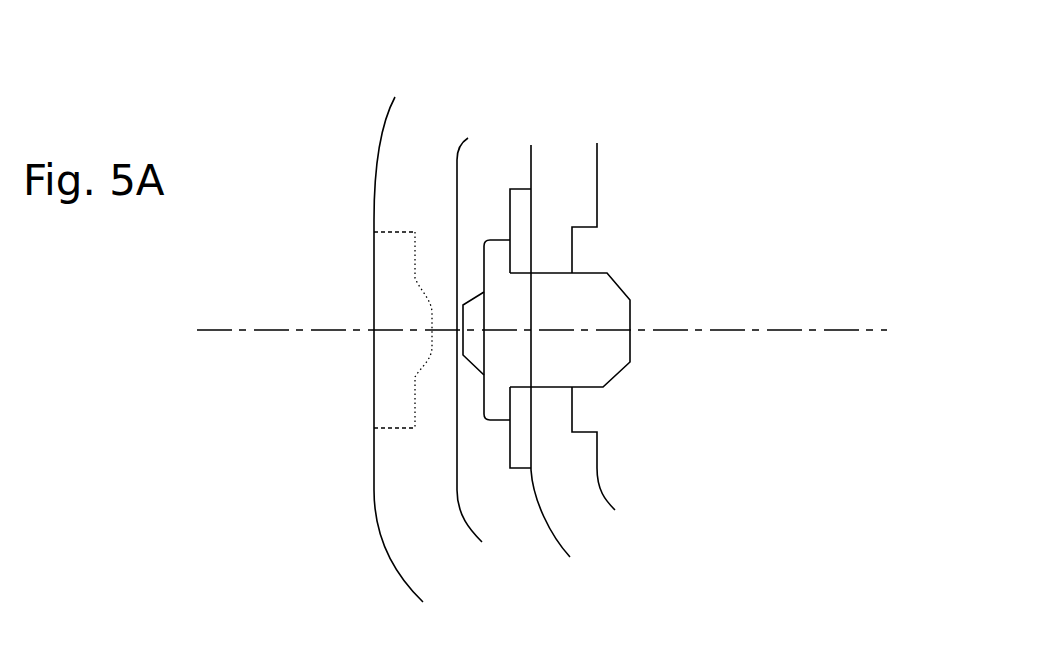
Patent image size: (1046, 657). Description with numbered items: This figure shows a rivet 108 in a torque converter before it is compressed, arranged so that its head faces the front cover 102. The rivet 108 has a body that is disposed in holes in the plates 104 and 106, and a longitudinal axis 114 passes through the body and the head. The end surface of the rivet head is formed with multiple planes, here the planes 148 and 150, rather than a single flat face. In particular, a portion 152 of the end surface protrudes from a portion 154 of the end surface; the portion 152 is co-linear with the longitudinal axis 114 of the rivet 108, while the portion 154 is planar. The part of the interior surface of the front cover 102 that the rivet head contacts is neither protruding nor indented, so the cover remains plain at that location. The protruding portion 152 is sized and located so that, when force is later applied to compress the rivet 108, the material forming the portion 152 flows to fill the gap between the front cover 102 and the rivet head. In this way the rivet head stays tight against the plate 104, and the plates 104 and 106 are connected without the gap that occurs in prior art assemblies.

The front cover 102 is at (386, 115).
The plate 104 is at (522, 188).
The plate 106 is at (597, 175).
The rivet 108 is at (625, 385).
The longitudinal axis 114 is at (262, 329).
The plane 148 is at (457, 317).
The plane 150 is at (484, 265).
The portion of the end surface of the rivet head 152 is at (470, 347).
The portion of the end surface of the rivet head 154 is at (498, 405).